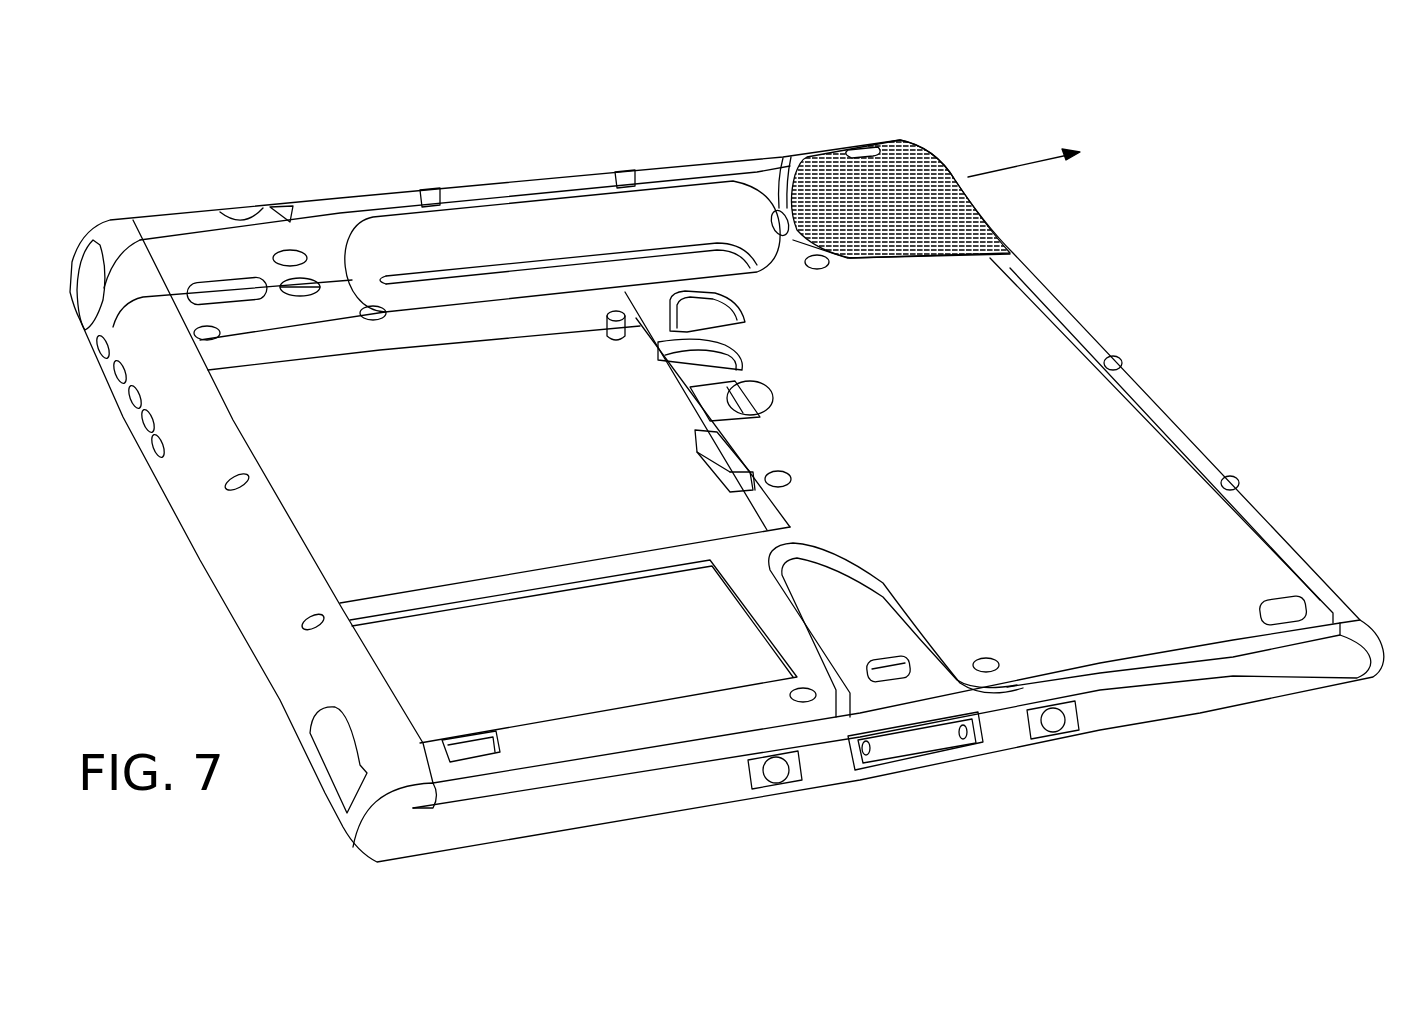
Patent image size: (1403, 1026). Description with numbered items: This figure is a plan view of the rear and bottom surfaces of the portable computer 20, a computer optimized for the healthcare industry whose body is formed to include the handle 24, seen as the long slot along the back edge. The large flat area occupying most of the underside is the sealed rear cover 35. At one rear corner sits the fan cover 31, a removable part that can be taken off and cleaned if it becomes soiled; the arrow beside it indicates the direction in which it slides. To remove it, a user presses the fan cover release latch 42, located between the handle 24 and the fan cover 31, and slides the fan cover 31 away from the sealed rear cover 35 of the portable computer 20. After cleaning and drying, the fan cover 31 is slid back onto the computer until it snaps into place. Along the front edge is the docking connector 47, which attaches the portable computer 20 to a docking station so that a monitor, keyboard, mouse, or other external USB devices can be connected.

The portable computer 20 is at (1190, 326).
The handle 24 is at (555, 212).
The fan cover 31 is at (898, 135).
The sealed rear cover 35 is at (1193, 527).
The fan cover release latch 42 is at (780, 158).
The docking connector 47 is at (913, 745).